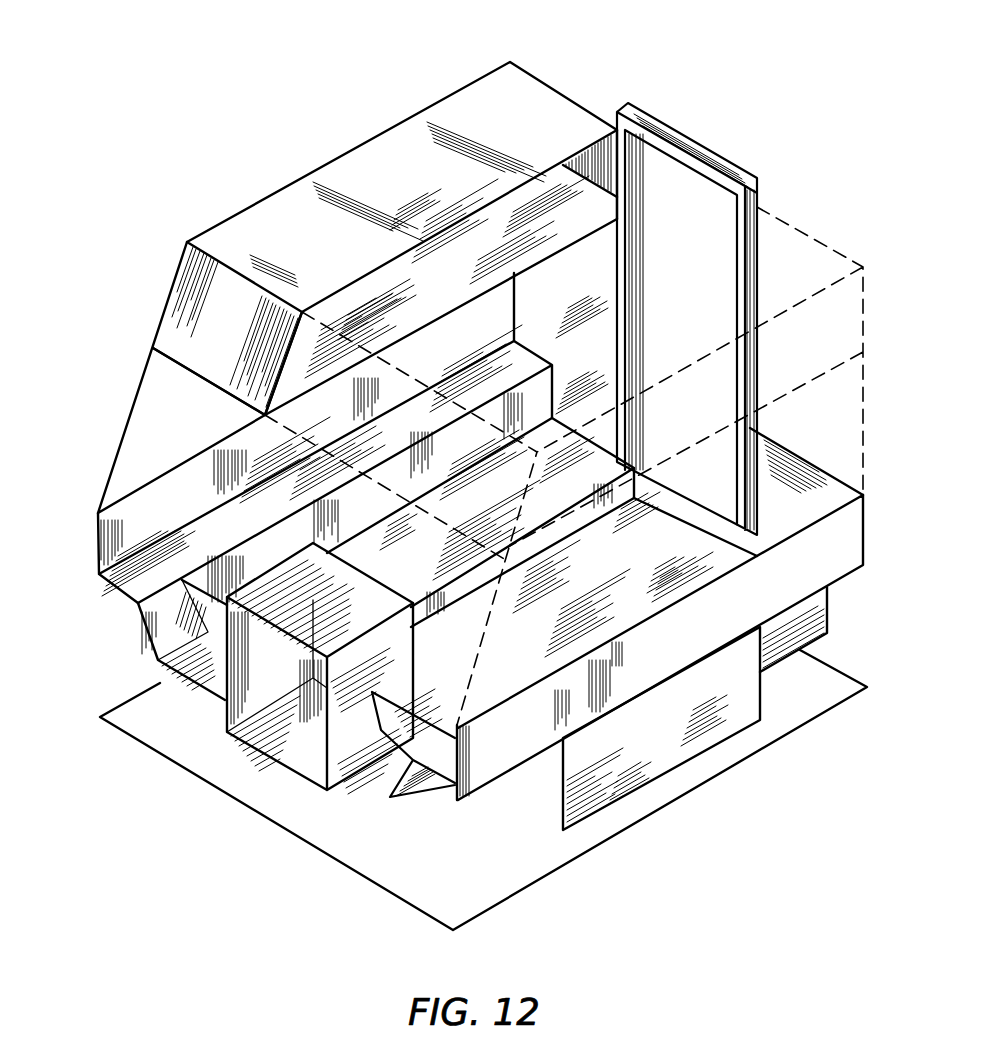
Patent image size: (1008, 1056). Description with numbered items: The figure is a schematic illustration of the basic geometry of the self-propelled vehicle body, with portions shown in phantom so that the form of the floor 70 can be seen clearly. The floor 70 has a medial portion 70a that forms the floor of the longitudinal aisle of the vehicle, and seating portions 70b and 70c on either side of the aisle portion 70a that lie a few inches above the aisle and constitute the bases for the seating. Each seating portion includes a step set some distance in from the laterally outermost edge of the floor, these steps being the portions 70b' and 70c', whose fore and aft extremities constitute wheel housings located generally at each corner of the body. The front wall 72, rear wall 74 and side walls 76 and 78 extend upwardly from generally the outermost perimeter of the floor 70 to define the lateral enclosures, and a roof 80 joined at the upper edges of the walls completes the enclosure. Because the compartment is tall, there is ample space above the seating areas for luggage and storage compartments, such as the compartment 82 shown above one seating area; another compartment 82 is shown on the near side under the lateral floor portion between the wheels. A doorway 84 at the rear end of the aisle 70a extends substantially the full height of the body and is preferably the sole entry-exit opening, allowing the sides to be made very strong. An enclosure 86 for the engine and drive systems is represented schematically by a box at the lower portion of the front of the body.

The floor 70 is at (422, 792).
The medial portion of floor 70a is at (613, 582).
The seating portion of floor 70b is at (507, 517).
The step of seating portion 70b' is at (327, 464).
The seating portion of floor 70c is at (660, 647).
The step of seating portion 70c' is at (431, 769).
The front wall 72 is at (134, 378).
The rear wall 74 is at (563, 93).
The side wall 76 is at (320, 170).
The side wall 78 is at (857, 354).
The roof 80 is at (445, 106).
The luggage and storage compartment 82 is at (443, 298).
The doorway 84 is at (636, 234).
The enclosure for engine and drive systems 86 is at (323, 610).